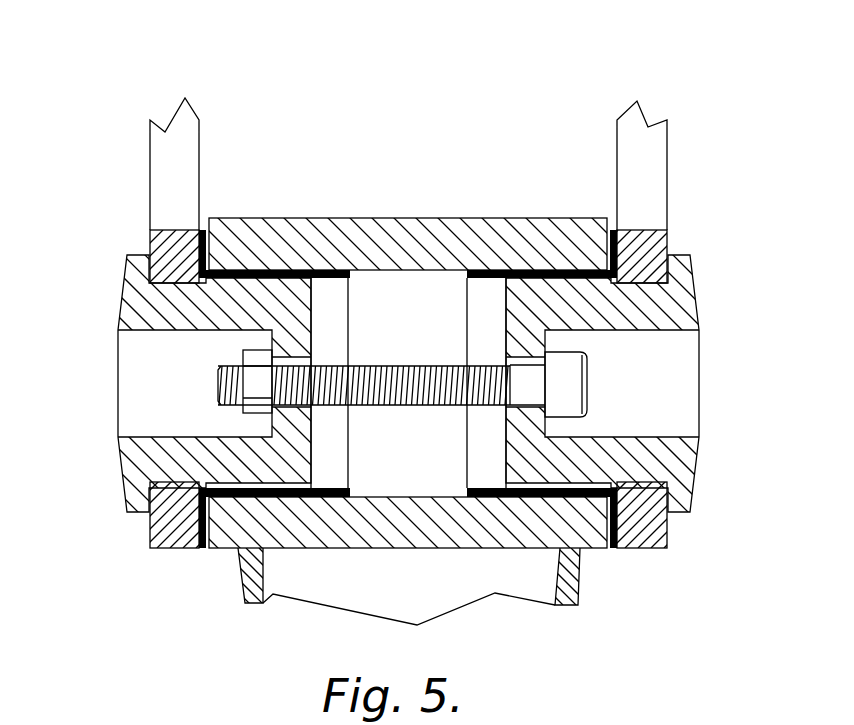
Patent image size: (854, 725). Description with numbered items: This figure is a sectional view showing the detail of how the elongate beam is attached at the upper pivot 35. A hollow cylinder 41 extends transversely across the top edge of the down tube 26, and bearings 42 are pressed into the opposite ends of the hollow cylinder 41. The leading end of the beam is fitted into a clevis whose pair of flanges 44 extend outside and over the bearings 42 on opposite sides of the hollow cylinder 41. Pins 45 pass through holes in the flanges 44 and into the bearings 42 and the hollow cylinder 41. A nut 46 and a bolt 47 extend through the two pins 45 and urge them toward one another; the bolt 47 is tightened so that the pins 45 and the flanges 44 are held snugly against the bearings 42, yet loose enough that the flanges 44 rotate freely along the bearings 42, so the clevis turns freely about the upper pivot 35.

The down tube 26 is at (240, 592).
The upper pivot 35 is at (529, 144).
The hollow cylinder 41 is at (273, 228).
The bearings 42 is at (333, 290).
The flanges 44 is at (152, 160).
The pins 45 is at (135, 302).
The nut 46 is at (245, 355).
The bolt 47 is at (573, 375).